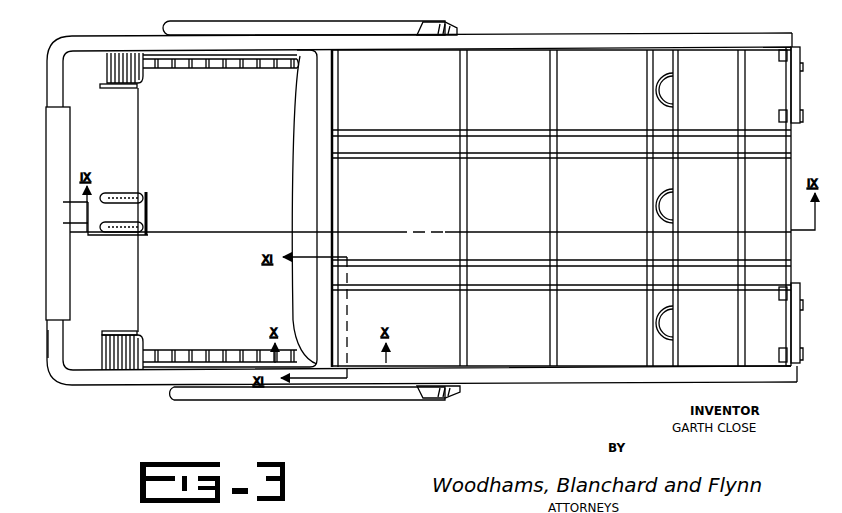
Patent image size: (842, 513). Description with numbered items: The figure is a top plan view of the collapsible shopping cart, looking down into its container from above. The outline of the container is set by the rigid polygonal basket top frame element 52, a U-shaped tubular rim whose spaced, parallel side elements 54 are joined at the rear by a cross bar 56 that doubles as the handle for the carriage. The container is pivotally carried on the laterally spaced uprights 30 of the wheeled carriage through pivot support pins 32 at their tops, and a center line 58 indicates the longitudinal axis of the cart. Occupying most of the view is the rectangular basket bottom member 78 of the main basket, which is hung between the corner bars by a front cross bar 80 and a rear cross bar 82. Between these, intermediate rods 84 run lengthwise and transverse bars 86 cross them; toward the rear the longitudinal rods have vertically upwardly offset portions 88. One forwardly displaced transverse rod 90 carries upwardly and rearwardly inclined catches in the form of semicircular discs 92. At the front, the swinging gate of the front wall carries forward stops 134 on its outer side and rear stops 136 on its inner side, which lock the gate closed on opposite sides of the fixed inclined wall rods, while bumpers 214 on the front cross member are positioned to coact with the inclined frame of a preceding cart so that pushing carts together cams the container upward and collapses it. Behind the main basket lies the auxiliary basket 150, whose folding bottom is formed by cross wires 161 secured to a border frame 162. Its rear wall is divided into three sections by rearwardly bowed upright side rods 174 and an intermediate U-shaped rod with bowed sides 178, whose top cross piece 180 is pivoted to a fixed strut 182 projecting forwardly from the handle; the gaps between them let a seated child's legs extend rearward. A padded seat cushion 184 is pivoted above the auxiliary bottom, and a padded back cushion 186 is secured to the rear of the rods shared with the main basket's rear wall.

The uprights 30 is at (327, 401).
The pivot support pins 32 is at (452, 400).
The basket top frame element 52 is at (563, 30).
The side elements 54 is at (600, 35).
The cross bar 56 is at (46, 333).
The center line / axis 58 is at (330, 233).
The basket bottom member 78 is at (573, 106).
The front cross bar 80 is at (788, 186).
The rear cross bar 82 is at (338, 90).
The intermediate rods 84 is at (520, 156).
The transverse bars 86 is at (553, 246).
The upwardly offset portions 88 is at (404, 130).
The forwardly displaced transverse rod 90 is at (679, 252).
The semicircular discs 92 is at (676, 206).
The forward stops 134 is at (799, 63).
The rear stops 136 is at (780, 51).
The auxiliary basket 150 is at (146, 395).
The cross wires 161 is at (298, 59).
The border frame 162 is at (257, 59).
The upright side rods 174 is at (123, 333).
The intermediate U-shaped rod sides 178 is at (128, 191).
The top cross piece 180 is at (148, 193).
The fixed strut 182 is at (140, 210).
The padded seat cushion 184 is at (155, 121).
The padded back cushion 186 is at (303, 126).
The bumpers 214 is at (801, 93).